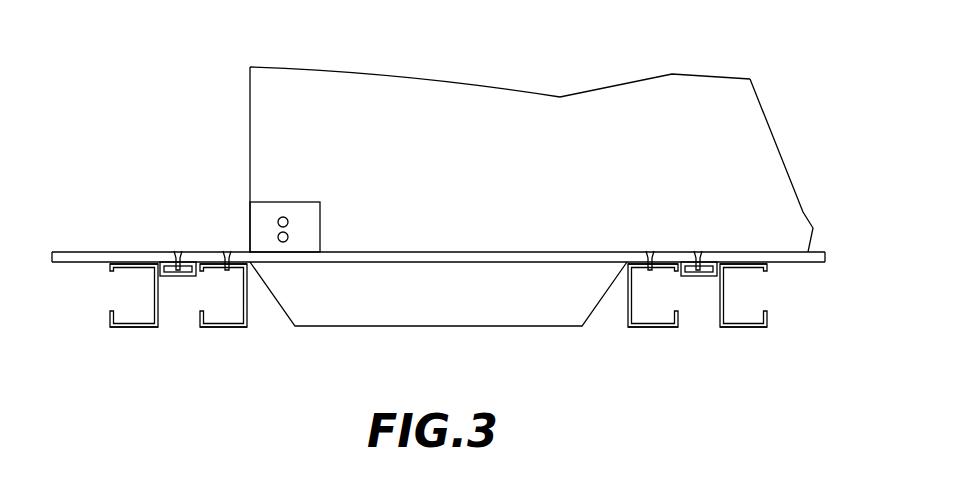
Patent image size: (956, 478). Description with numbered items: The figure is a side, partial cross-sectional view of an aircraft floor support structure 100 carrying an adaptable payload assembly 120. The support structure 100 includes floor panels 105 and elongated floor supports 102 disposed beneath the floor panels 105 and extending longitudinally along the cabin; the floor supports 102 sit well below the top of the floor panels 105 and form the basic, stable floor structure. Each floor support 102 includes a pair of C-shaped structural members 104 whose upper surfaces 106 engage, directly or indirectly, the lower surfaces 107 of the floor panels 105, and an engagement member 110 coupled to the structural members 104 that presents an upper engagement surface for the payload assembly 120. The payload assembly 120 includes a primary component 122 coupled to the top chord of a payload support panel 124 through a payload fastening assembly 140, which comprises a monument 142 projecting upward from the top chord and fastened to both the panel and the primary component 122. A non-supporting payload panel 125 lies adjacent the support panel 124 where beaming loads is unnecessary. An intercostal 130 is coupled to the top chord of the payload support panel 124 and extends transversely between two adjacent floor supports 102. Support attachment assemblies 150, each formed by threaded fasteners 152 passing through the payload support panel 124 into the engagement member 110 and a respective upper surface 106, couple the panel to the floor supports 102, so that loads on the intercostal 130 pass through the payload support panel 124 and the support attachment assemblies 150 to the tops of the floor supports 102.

The support structure 100 is at (100, 93).
The floor support 102 is at (125, 296).
The structural member 104 is at (132, 327).
The floor panel 105 is at (83, 252).
The upper surface 106 is at (130, 267).
The lower surface 107 is at (68, 265).
The engagement member 110 is at (177, 277).
The adaptable payload assembly 120 is at (662, 60).
The primary component 122 is at (470, 87).
The payload support panel 124 is at (243, 252).
The non-supporting payload panel 125 is at (786, 252).
The intercostal 130 is at (440, 326).
The payload fastening assembly 140 is at (344, 173).
The monument 142 is at (263, 200).
The support attachment assembly 150 is at (110, 160).
The threaded fastener 152 is at (226, 250).